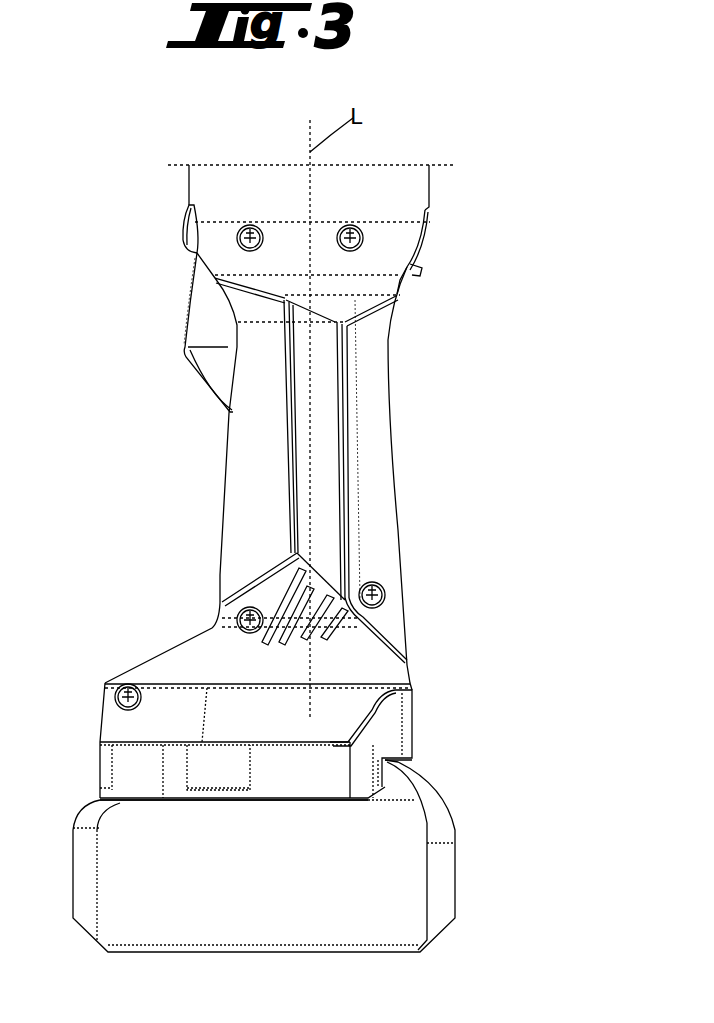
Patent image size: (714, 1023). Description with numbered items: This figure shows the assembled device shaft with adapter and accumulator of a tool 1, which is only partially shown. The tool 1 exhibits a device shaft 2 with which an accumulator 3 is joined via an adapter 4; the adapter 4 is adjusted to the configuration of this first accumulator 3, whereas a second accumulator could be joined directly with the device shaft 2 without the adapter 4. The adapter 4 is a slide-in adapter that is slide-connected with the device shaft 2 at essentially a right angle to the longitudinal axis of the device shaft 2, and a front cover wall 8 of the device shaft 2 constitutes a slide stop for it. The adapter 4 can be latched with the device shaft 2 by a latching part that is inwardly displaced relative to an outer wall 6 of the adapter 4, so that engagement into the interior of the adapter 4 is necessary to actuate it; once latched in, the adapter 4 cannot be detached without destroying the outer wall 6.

The tool 1 is at (513, 238).
The device shaft 2 is at (203, 533).
The accumulator 3 is at (128, 875).
The adapter 4 is at (420, 710).
The outer wall 6 is at (413, 733).
The front cover wall 8 is at (100, 718).